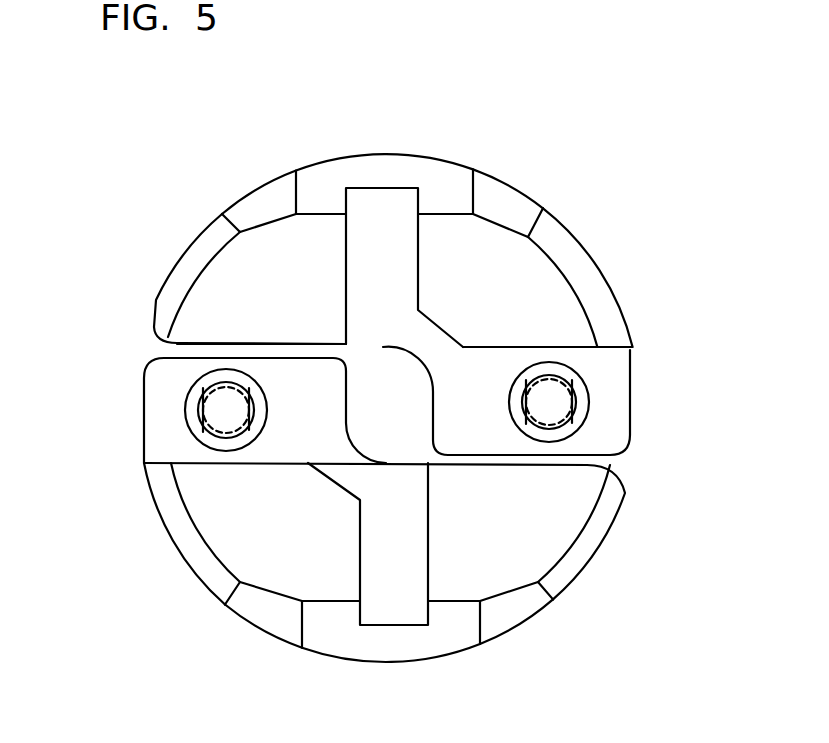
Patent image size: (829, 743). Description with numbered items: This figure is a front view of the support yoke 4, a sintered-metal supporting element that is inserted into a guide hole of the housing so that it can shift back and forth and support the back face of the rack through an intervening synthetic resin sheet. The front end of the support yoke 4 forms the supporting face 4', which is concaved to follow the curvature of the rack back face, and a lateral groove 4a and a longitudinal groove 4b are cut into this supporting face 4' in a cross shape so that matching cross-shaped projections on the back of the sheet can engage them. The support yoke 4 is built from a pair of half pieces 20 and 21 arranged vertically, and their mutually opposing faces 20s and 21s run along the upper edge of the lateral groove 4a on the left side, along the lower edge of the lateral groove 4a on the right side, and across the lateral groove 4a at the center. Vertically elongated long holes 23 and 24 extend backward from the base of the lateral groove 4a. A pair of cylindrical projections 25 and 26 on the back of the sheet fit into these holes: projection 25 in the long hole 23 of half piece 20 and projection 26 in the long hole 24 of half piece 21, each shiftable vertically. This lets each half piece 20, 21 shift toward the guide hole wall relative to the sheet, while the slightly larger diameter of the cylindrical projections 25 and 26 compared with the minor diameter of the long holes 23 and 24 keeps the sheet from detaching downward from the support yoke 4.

The support yoke 4 is at (393, 399).
The supporting face 4' is at (548, 275).
The lateral groove 4a is at (618, 383).
The longitudinal groove 4b is at (363, 203).
The half piece 20 is at (258, 247).
The face of half piece 20s is at (203, 345).
The half piece 21 is at (233, 543).
The face of half piece 21s is at (573, 465).
The long hole 23 is at (563, 375).
The long hole 24 is at (222, 437).
The cylindrical projection 25 is at (570, 420).
The cylindrical projection 26 is at (222, 440).